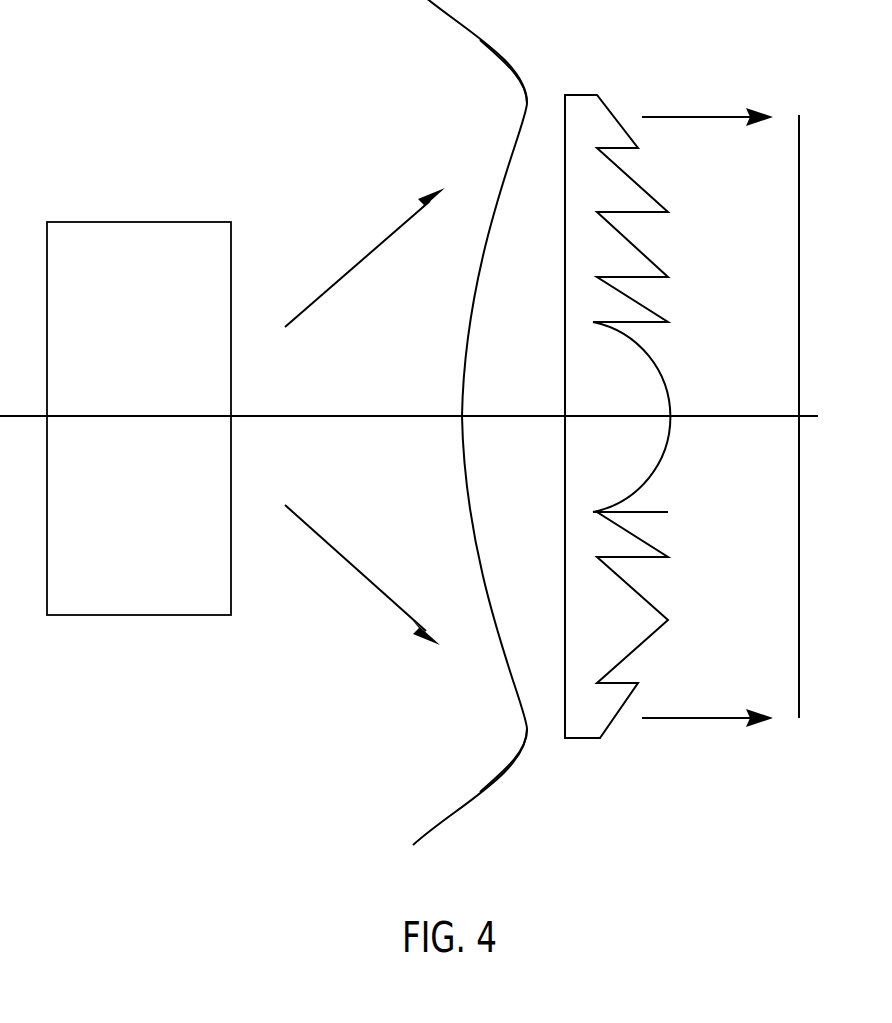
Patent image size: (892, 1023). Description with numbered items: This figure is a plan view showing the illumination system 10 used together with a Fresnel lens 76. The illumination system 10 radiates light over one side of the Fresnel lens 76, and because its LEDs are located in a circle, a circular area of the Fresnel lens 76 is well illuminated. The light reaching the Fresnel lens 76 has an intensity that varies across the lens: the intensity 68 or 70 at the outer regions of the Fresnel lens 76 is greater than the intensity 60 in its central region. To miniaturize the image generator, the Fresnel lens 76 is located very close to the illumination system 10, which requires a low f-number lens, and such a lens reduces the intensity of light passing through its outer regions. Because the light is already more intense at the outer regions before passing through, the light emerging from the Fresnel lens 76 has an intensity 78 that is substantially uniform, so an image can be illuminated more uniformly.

The illumination system 10 is at (150, 222).
The intensity in a central region 60 is at (463, 399).
The intensity at outer region 68 is at (527, 115).
The intensity at outer region 70 is at (528, 742).
The Fresnel lens 76 is at (580, 88).
The uniform intensity 78 is at (798, 213).